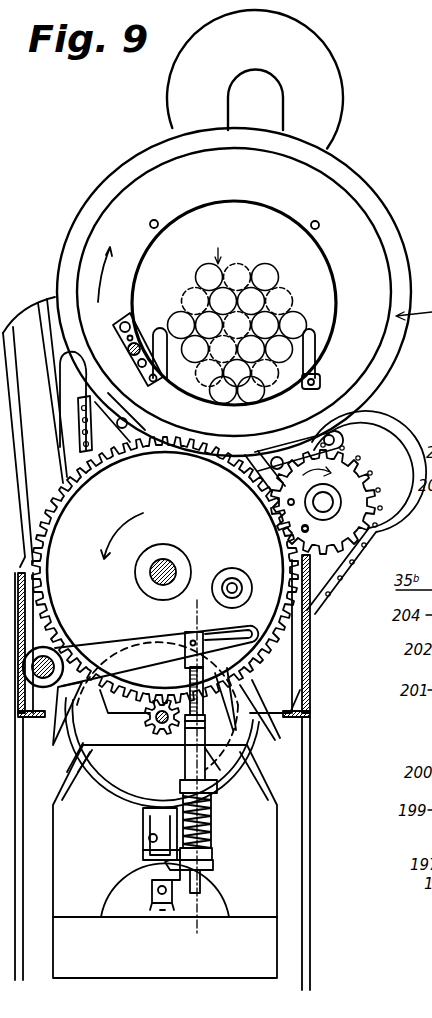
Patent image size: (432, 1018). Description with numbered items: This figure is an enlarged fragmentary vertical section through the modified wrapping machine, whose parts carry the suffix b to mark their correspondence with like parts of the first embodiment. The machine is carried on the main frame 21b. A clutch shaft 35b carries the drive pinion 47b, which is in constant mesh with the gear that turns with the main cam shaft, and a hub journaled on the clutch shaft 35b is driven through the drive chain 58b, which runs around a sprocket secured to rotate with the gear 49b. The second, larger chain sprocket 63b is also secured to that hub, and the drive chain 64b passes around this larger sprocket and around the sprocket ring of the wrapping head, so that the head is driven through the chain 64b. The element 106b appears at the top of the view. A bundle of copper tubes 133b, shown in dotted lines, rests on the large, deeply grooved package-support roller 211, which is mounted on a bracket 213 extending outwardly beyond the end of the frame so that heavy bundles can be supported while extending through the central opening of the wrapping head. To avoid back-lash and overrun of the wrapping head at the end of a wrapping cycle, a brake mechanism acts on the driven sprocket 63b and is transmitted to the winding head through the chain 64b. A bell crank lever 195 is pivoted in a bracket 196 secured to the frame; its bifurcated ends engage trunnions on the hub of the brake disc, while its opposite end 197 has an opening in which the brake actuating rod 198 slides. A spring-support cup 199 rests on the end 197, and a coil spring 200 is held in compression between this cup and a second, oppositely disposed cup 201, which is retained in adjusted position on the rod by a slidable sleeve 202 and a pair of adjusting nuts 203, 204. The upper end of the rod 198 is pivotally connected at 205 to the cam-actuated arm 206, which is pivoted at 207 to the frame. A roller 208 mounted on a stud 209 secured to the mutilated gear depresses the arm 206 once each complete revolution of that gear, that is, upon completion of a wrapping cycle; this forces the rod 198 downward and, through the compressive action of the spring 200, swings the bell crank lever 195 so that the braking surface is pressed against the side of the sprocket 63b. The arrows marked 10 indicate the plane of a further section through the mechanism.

The disc 106b is at (342, 86).
The bundle of copper tubes 133b is at (226, 243).
The package-support roller 211 is at (163, 336).
The gear 49b is at (348, 518).
The drive chain 58b is at (332, 577).
The roller 208 is at (232, 569).
The stud 209 is at (239, 580).
The direction arrow 10 is at (207, 608).
The pivot 207 is at (66, 647).
The cam-actuated arm 206 is at (240, 627).
The pivotal connection 205 is at (201, 634).
The slidable sleeve 202 is at (185, 782).
The adjusting nut 203 is at (205, 721).
The adjusting nut 204 is at (205, 728).
The clutch shaft 35b is at (148, 722).
The main frame 21b is at (301, 894).
The drive pinion 47b is at (157, 730).
The drive chain 64b is at (111, 792).
The bracket 213 is at (134, 897).
The chain sprocket 63b is at (216, 765).
The spring cup 201 is at (214, 792).
The coil spring 200 is at (212, 827).
The spring-support cup 199 is at (213, 853).
The end of bell crank lever 197 is at (214, 868).
The brake actuating rod 198 is at (201, 883).
The bell crank lever 195 is at (143, 820).
The bracket 196 is at (150, 838).